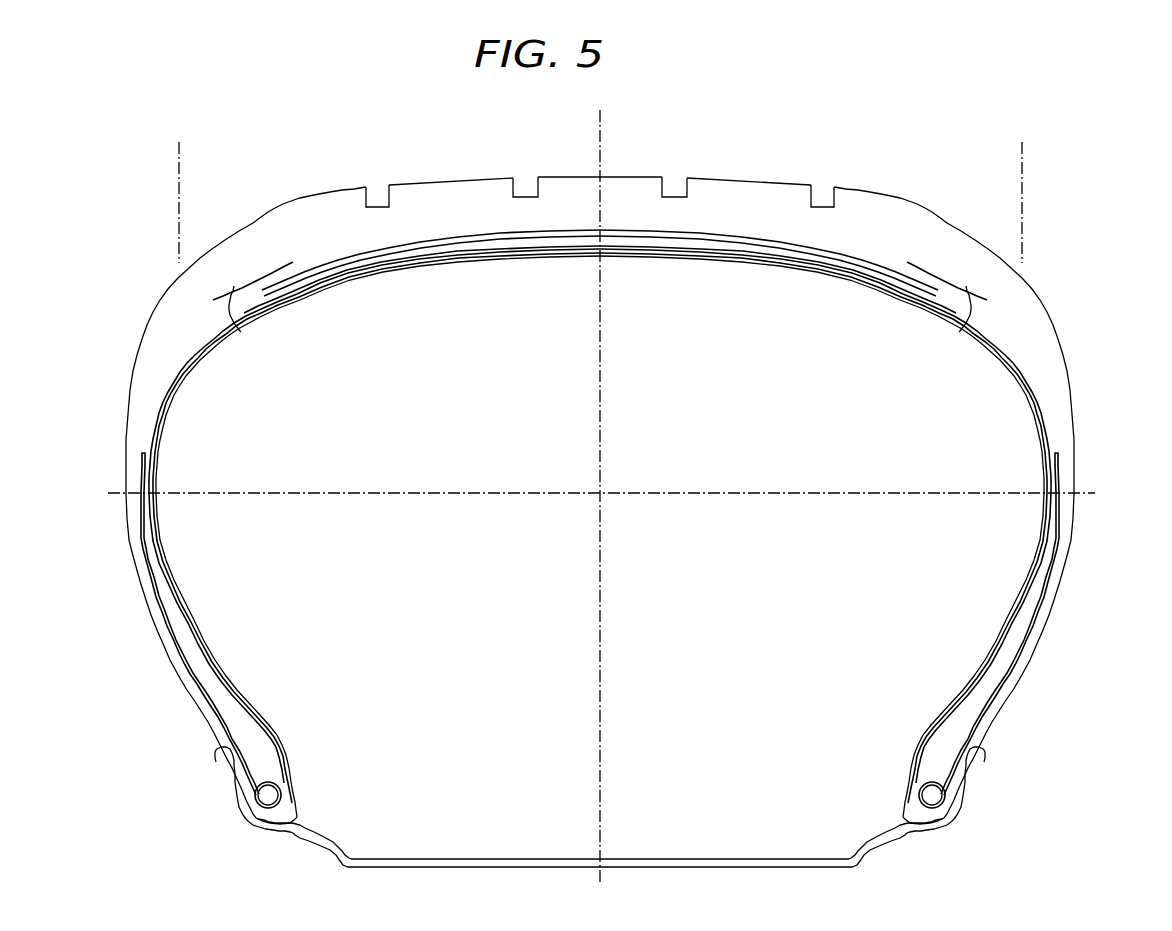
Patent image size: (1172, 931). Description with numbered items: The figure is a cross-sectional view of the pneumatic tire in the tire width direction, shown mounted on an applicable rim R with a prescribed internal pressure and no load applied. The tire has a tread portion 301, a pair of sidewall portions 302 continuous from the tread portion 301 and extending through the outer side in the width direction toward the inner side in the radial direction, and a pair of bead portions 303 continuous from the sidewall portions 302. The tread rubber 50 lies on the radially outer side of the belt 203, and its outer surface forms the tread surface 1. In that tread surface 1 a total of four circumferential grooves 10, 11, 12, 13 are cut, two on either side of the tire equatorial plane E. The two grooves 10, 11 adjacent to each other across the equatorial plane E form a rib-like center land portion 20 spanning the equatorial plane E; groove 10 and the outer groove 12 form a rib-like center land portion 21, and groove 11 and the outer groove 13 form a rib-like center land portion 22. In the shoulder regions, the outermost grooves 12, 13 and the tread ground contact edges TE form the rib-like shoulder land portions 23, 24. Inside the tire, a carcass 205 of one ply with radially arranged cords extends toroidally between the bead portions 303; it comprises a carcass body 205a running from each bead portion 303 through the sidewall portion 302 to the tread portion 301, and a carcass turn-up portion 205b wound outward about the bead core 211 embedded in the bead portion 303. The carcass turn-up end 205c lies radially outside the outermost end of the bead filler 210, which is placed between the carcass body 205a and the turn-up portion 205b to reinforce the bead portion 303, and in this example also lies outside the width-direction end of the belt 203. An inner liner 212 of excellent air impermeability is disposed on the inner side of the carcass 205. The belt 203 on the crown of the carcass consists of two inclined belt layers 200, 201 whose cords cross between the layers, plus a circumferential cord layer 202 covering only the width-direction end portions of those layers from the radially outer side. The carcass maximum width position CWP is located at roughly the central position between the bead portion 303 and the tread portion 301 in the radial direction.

The tread surface 1 is at (503, 157).
The circumferential groove 10 is at (527, 193).
The circumferential groove 11 is at (675, 193).
The circumferential groove 12 is at (378, 203).
The circumferential groove 13 is at (824, 204).
The rib-like center land portion 20 is at (568, 176).
The rib-like center land portion 21 is at (443, 180).
The rib-like center land portion 22 is at (750, 181).
The rib-like shoulder land portion 23 is at (300, 194).
The rib-like shoulder land portion 24 is at (918, 198).
The tread rubber 50 is at (860, 215).
The inclined belt layer 200 is at (387, 254).
The inclined belt layer 201 is at (340, 276).
The circumferential cord layer 202 is at (236, 331).
The belt 203 is at (220, 310).
The carcass 205 is at (158, 565).
The carcass body 205a is at (212, 664).
The carcass turn-up portion 205b is at (197, 680).
The carcass turn-up end 205c is at (143, 453).
The bead filler 210 is at (252, 740).
The bead core 211 is at (265, 797).
The inner liner 212 is at (298, 780).
The tread portion 301 is at (248, 200).
The sidewall portion 302 is at (98, 489).
The bead portion 303 is at (197, 773).
The applicable rim R is at (975, 748).
The tire equatorial plane E is at (600, 486).
The tread ground contact edge TE is at (600, 191).
The carcass maximum width position CWP is at (601, 481).